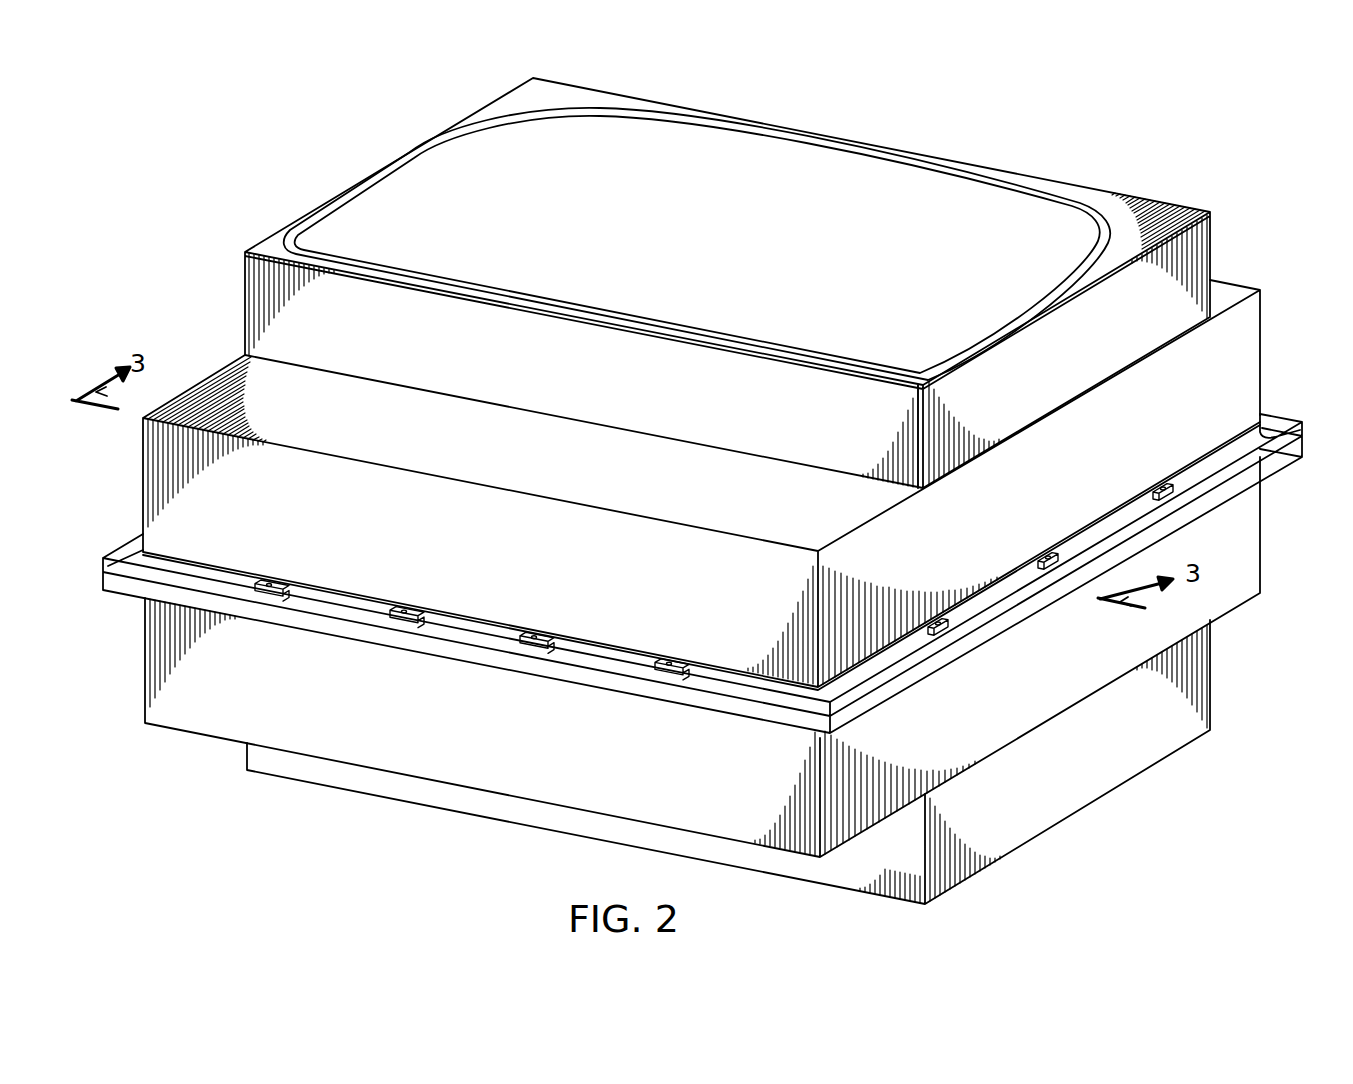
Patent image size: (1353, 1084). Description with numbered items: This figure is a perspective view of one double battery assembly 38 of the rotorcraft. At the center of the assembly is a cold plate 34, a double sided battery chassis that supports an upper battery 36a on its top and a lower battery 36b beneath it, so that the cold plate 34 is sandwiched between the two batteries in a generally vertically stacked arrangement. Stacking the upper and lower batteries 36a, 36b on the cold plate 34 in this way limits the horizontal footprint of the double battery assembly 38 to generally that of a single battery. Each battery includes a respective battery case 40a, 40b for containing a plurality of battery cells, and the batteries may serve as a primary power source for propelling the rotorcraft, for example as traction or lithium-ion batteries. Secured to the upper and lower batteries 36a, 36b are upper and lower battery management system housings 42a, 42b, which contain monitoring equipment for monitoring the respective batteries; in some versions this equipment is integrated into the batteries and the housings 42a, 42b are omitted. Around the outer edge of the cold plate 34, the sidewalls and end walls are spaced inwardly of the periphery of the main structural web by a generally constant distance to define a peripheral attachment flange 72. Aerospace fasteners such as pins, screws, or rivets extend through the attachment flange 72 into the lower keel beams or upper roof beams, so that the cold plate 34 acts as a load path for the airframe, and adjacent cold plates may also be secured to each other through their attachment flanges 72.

The cold plate 34 is at (702, 596).
The upper battery 36a is at (747, 378).
The lower battery 36b is at (656, 680).
The double battery assembly 38 is at (329, 128).
The battery case 40a is at (1258, 357).
The battery case 40b is at (200, 725).
The upper battery management system housing 42a is at (1090, 198).
The lower battery management system housing 42b is at (410, 800).
The peripheral attachment flange 72 is at (905, 668).